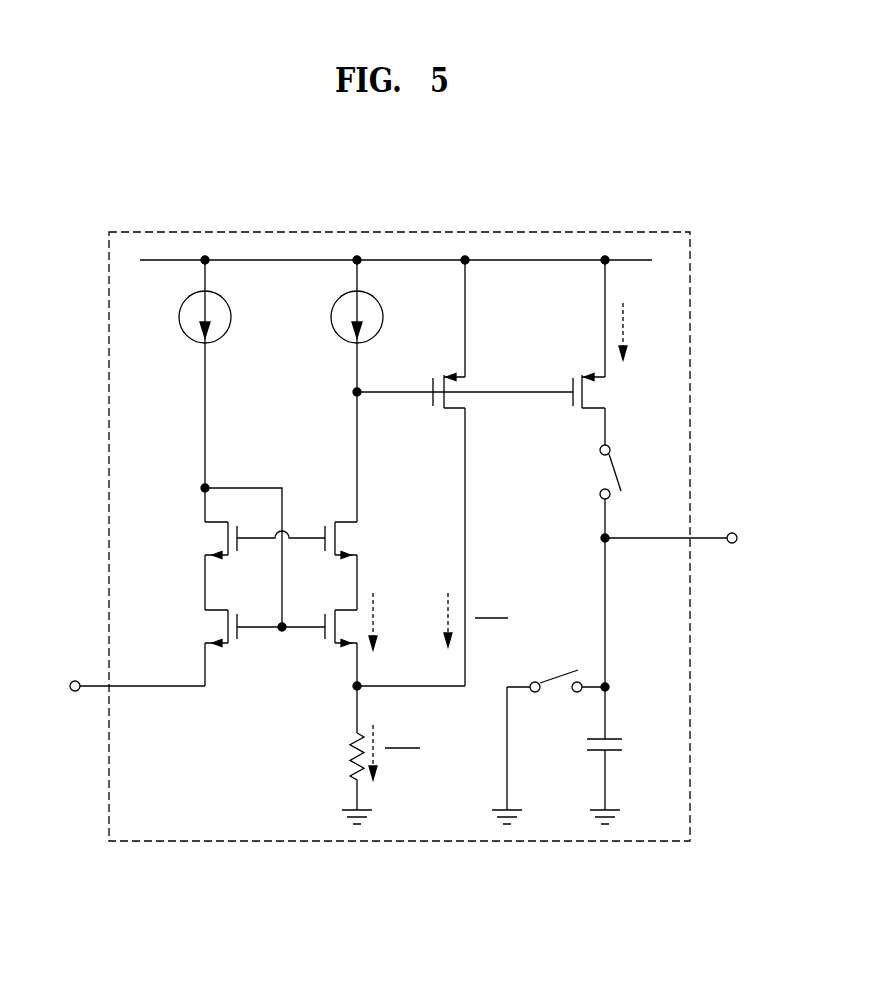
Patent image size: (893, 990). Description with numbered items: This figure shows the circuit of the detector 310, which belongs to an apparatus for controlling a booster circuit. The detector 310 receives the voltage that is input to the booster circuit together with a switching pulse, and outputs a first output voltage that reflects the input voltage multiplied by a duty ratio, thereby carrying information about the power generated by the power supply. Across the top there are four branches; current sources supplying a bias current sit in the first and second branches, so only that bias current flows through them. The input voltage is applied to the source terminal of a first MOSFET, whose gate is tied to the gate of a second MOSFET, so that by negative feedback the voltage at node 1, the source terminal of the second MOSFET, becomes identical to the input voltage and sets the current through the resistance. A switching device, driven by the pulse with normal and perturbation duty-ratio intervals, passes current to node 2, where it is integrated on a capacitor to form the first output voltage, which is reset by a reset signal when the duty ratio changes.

The detector 310 is at (573, 232).
The node 1 is at (343, 686).
The node 2 is at (591, 538).